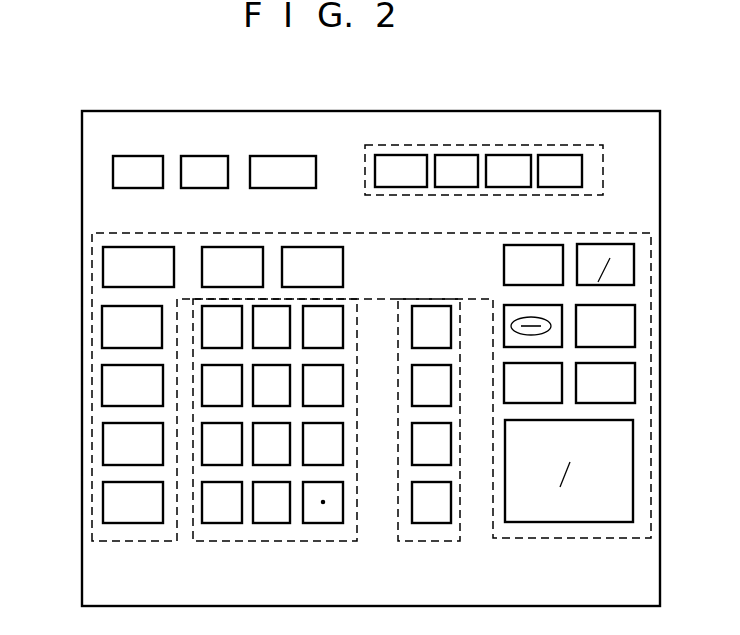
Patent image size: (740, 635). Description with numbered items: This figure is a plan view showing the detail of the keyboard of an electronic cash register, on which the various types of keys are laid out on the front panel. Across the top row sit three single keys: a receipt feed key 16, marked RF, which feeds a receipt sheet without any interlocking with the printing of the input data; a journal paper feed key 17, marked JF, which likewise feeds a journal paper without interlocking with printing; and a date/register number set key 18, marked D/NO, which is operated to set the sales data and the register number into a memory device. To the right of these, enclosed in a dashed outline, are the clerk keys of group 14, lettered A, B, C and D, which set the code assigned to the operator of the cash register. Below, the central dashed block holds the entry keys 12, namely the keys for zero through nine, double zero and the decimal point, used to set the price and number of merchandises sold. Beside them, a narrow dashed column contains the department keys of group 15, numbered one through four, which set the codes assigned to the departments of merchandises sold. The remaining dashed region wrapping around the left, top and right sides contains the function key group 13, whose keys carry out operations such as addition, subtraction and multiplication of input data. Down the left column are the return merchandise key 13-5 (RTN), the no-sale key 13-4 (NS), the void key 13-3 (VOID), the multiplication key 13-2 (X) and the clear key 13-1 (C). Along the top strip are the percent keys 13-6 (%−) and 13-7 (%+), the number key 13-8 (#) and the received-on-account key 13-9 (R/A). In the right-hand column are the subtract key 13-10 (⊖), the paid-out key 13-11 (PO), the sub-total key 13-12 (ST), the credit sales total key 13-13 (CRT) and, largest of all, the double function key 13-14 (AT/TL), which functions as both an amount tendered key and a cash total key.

The entry keys 12 is at (320, 541).
The function key group 13 is at (162, 541).
The clerk key group 14 is at (454, 145).
The department key group 15 is at (450, 541).
The receipt feed key 16 is at (156, 156).
The journal paper feed key 17 is at (226, 156).
The date/register number set key 18 is at (305, 156).
The clear key 13-1 is at (103, 503).
The multiplication key 13-2 is at (103, 445).
The void key 13-3 is at (102, 388).
The no-sale key 13-4 is at (102, 330).
The return merchandise key 13-5 is at (103, 268).
The percent minus key 13-6 is at (240, 247).
The percent plus key 13-7 is at (318, 247).
The number key 13-8 is at (541, 245).
The received-on-account key 13-9 is at (634, 270).
The subtract key 13-10 is at (521, 303).
The paid-out key 13-11 is at (635, 326).
The sub-total key 13-12 is at (545, 403).
The credit sales total key 13-13 is at (635, 378).
The double function key 13-14 is at (634, 478).